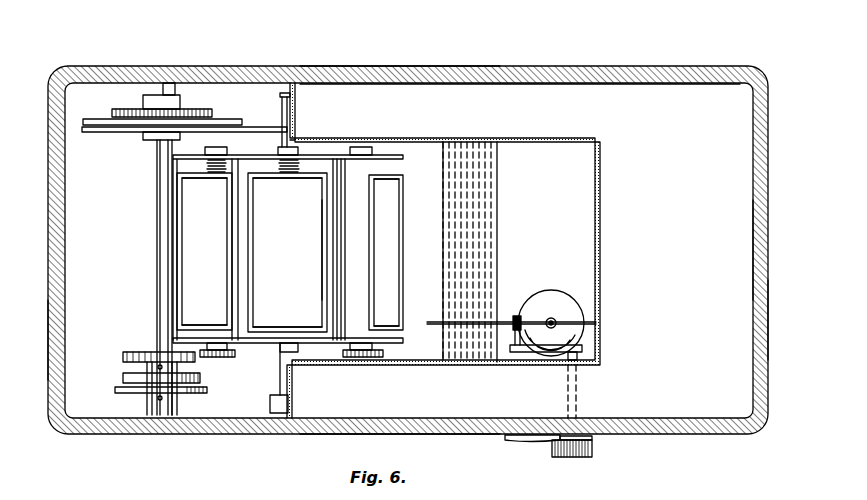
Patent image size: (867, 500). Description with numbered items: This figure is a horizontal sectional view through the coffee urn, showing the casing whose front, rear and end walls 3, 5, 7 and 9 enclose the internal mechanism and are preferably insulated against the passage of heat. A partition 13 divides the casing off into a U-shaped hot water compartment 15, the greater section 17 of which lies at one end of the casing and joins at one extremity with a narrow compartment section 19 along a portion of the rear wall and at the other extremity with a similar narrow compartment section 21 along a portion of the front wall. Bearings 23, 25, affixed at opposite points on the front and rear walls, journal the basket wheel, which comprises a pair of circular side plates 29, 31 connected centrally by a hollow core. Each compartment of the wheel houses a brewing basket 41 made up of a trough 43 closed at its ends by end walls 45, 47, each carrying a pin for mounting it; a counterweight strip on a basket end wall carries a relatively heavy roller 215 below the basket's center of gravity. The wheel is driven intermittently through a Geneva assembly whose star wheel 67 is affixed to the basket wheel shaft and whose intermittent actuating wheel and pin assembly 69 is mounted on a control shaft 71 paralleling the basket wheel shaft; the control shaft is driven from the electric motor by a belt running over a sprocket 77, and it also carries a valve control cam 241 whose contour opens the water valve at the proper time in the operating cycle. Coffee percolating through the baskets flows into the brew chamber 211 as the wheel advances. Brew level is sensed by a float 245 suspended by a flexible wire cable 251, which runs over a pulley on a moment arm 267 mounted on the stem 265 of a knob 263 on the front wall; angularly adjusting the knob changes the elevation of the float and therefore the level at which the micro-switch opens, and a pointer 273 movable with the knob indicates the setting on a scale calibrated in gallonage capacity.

The front wall 3 is at (250, 432).
The rear wall 5 is at (465, 67).
The end wall 7 is at (55, 343).
The end wall 9 is at (768, 316).
The partition 13 is at (563, 143).
The hot water compartment 15 is at (690, 186).
The greater section 17 is at (732, 262).
The narrow compartment section 19 is at (485, 102).
The narrow compartment section 21 is at (405, 408).
The bearing 23 is at (283, 408).
The bearing 25 is at (282, 95).
The circular side plate 29 is at (262, 343).
The circular side plate 31 is at (265, 152).
The brewing basket 41 is at (210, 256).
The trough 43 is at (326, 262).
The end wall 45 is at (305, 328).
The end wall 47 is at (272, 180).
The star wheel 67 is at (282, 127).
The intermittent actuating wheel and pin assembly 69 is at (122, 135).
The control shaft 71 is at (157, 180).
The sprocket 77 is at (128, 110).
The brew chamber 211 is at (545, 247).
The roller 215 is at (218, 357).
The valve control cam 241 is at (130, 380).
The float 245 is at (553, 306).
The flexible wire cable 251 is at (472, 322).
The knob 263 is at (593, 455).
The stem 265 is at (568, 358).
The moment arm 267 is at (528, 352).
The pointer 273 is at (525, 441).